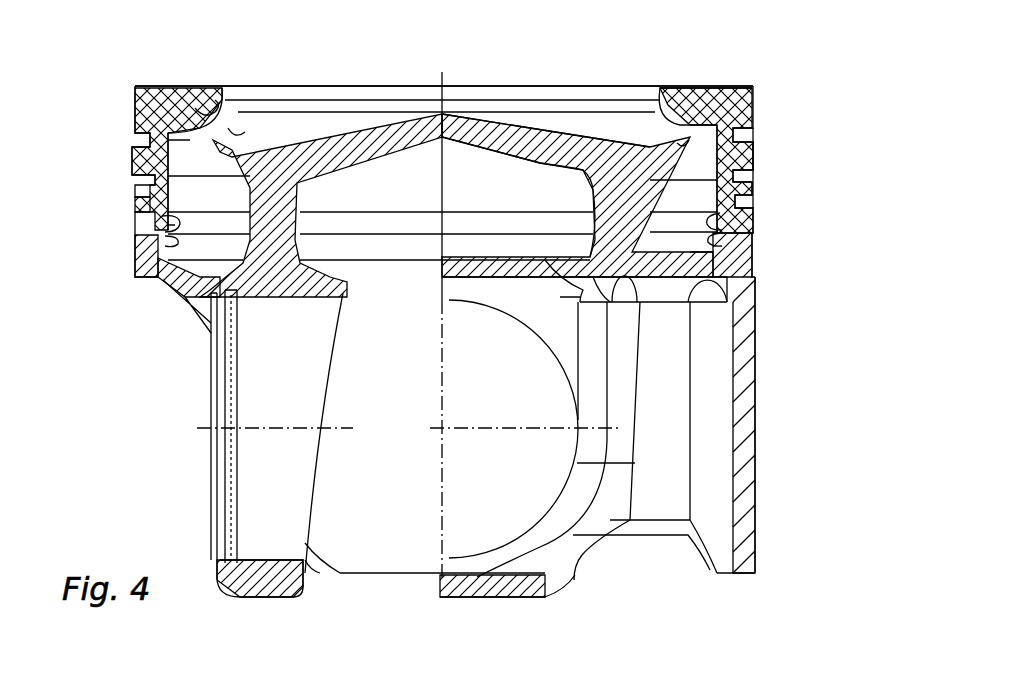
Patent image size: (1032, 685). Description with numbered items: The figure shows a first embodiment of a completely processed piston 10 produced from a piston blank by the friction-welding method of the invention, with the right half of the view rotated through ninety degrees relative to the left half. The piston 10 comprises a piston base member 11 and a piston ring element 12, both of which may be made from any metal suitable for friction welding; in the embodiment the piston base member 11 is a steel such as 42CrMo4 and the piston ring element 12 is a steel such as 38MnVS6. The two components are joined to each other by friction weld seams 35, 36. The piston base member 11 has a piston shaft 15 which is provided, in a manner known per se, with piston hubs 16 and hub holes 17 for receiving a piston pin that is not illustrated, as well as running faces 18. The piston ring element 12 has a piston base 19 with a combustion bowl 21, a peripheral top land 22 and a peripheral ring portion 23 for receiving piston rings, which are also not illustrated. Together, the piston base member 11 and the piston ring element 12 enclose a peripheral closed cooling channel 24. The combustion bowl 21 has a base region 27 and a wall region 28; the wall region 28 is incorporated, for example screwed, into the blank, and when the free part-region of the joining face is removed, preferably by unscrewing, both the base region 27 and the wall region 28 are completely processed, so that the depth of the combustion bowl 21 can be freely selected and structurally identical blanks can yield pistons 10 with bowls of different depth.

The piston 10 is at (795, 58).
The piston base member 11 is at (755, 318).
The piston ring element 12 is at (720, 82).
The piston shaft 15 is at (822, 570).
The piston hub 16 is at (267, 580).
The hub hole 17 is at (260, 500).
The running face 18 is at (757, 405).
The piston base 19 is at (593, 88).
The combustion bowl 21 is at (533, 88).
The top land 22 is at (753, 97).
The ring portion 23 is at (823, 125).
The cooling channel 24 is at (187, 160).
The base region 27 is at (340, 86).
The wall region 28 is at (236, 118).
The friction weld seam 35 is at (160, 236).
The friction weld seam 36 is at (272, 86).